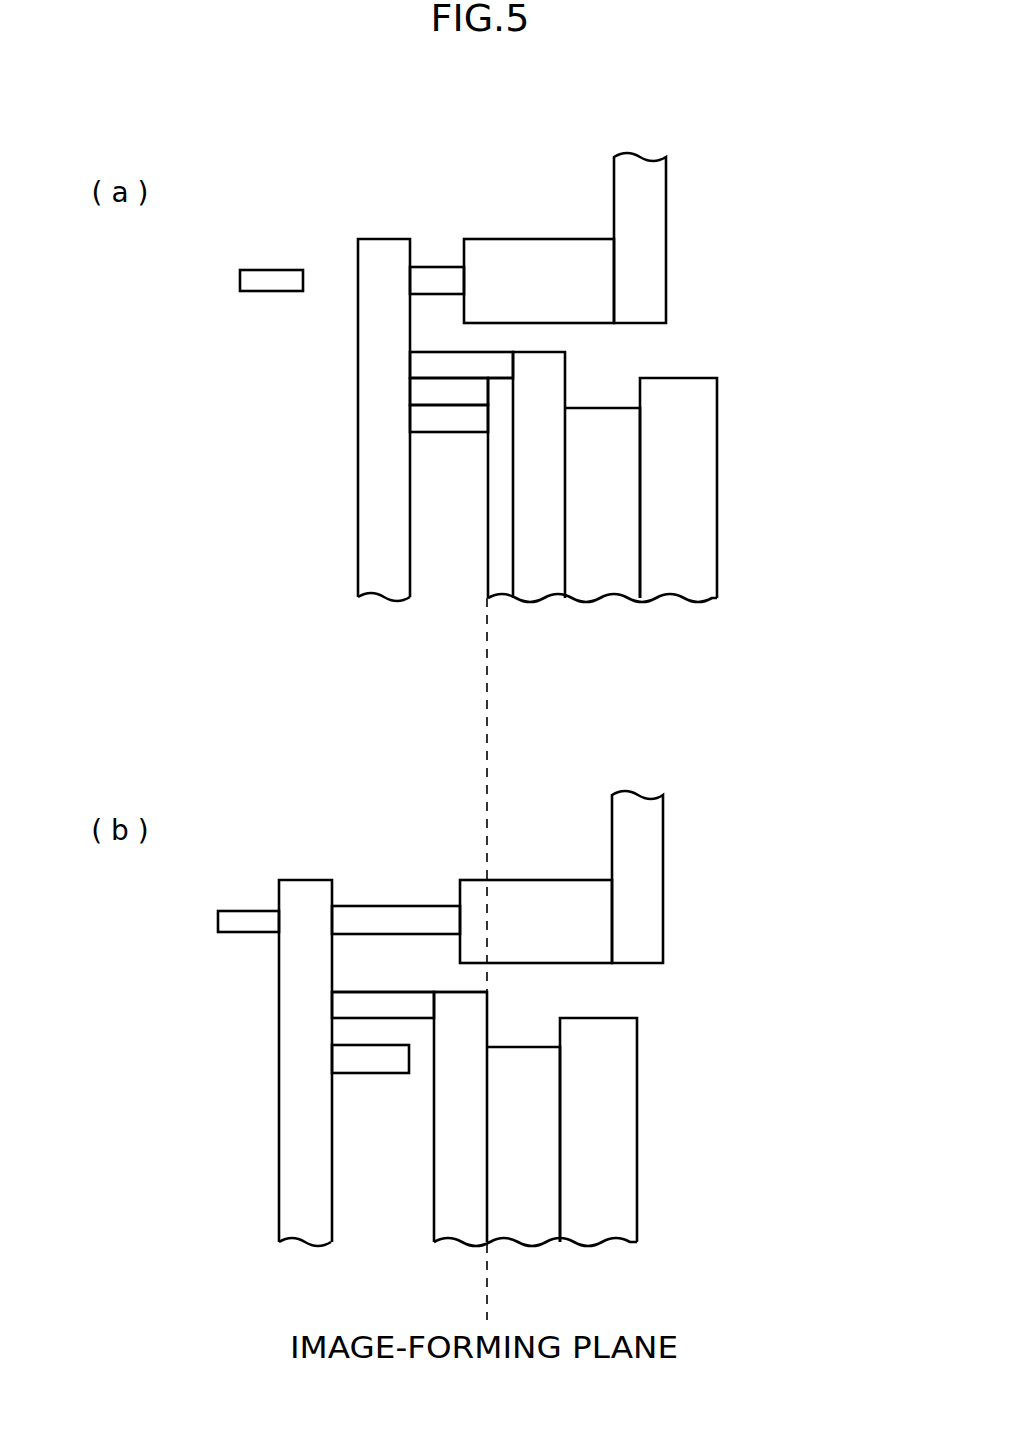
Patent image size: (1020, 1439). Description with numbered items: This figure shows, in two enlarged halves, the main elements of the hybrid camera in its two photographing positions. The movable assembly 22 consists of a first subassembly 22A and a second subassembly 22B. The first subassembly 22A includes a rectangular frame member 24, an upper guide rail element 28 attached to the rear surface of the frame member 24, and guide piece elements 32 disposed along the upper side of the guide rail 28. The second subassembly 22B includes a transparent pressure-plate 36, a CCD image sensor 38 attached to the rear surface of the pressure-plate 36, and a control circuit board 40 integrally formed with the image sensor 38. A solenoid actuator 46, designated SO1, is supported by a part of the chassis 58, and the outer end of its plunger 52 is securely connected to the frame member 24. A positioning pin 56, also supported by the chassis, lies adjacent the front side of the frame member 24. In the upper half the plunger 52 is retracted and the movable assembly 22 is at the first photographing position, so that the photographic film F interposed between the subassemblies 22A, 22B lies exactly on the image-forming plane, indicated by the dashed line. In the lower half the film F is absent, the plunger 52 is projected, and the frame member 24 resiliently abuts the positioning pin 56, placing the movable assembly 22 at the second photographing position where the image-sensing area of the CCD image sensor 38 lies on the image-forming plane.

The movable assembly 22 is at (325, 457).
The first subassembly 22A is at (356, 355).
The second subassembly 22B is at (720, 490).
The rectangular frame member 24 is at (385, 582).
The upper guide rail element 28 is at (447, 420).
The guide piece element 32 is at (384, 1005).
The transparent pressure-plate 36 is at (535, 582).
The CCD image sensor 38 is at (600, 582).
The control circuit board 40 is at (675, 582).
The solenoid actuator 46 is at (538, 238).
The plunger 52 is at (441, 282).
The positioning pin 56 is at (273, 270).
The part of the chassis 58 is at (652, 237).
The photographic film F is at (488, 585).